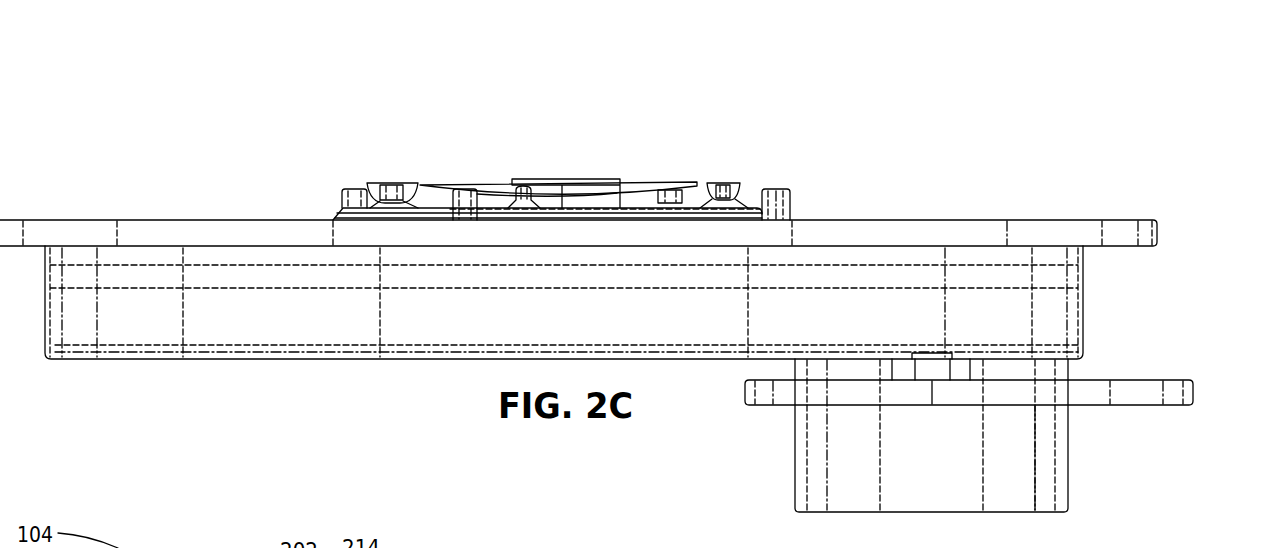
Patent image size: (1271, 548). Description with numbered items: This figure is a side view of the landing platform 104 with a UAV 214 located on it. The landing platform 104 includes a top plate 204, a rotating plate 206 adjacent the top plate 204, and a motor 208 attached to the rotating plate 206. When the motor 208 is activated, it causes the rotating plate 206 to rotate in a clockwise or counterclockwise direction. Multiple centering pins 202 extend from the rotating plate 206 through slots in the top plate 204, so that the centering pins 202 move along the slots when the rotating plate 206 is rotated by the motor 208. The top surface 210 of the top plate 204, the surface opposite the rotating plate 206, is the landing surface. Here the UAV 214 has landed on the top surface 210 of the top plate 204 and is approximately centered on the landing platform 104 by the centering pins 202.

The landing platform 104 is at (128, 87).
The centering pins 202 is at (353, 188).
The top plate 204 is at (1160, 233).
The rotating plate 206 is at (1085, 318).
The motor 208 is at (1070, 492).
The top surface 210 is at (903, 205).
The UAV 214 is at (650, 183).